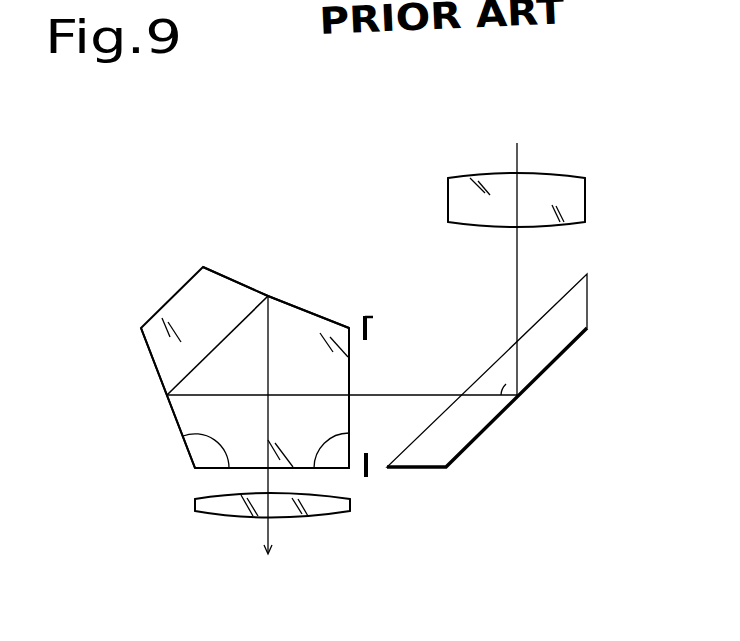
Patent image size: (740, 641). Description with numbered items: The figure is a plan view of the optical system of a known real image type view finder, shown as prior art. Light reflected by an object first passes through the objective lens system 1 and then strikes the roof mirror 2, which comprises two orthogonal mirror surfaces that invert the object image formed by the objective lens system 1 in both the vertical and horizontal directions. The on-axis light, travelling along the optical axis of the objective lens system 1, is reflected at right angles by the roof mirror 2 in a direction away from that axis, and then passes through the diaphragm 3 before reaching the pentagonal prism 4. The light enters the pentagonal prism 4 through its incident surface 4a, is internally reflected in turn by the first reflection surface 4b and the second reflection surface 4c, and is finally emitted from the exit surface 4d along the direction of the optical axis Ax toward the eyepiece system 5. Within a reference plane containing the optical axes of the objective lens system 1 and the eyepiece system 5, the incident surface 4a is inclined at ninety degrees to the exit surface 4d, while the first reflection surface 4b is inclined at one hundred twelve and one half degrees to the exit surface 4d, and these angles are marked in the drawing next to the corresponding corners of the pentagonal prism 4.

The objective lens system 1 is at (583, 205).
The roof mirror 2 is at (553, 345).
The diaphragm 3 is at (370, 319).
The pentagonal prism 4 is at (184, 300).
The incident surface 4a is at (350, 378).
The first reflection surface 4b is at (160, 383).
The second reflection surface 4c is at (284, 301).
The exit surface 4d is at (240, 469).
The eyepiece system 5 is at (242, 514).
The optical axis Ax is at (271, 536).